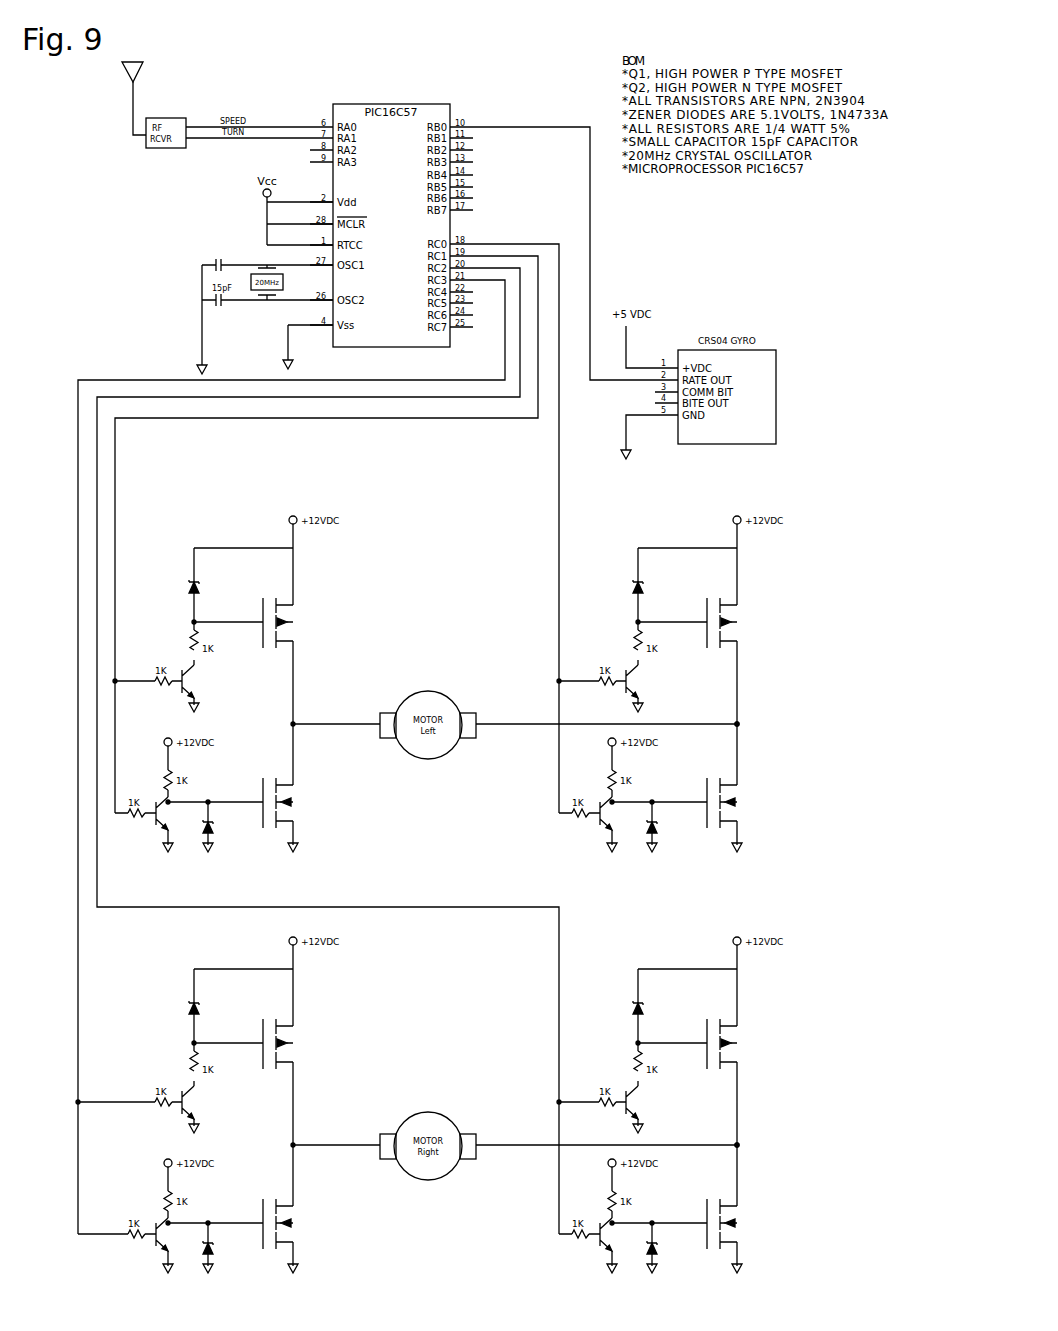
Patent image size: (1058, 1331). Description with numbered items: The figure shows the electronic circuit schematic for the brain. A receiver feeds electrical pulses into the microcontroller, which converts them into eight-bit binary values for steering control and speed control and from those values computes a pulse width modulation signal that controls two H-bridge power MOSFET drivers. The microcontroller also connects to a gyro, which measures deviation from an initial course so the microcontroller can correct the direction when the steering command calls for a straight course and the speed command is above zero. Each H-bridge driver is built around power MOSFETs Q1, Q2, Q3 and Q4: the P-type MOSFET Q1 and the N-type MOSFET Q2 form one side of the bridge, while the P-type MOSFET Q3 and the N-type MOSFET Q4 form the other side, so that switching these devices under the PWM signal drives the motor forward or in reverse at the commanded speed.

The high power P type MOSFET Q1 is at (289, 833).
The high power N type MOSFET Q2 is at (289, 1013).
The high power P type MOSFET Q3 is at (733, 833).
The high power N type MOSFET Q4 is at (733, 1013).